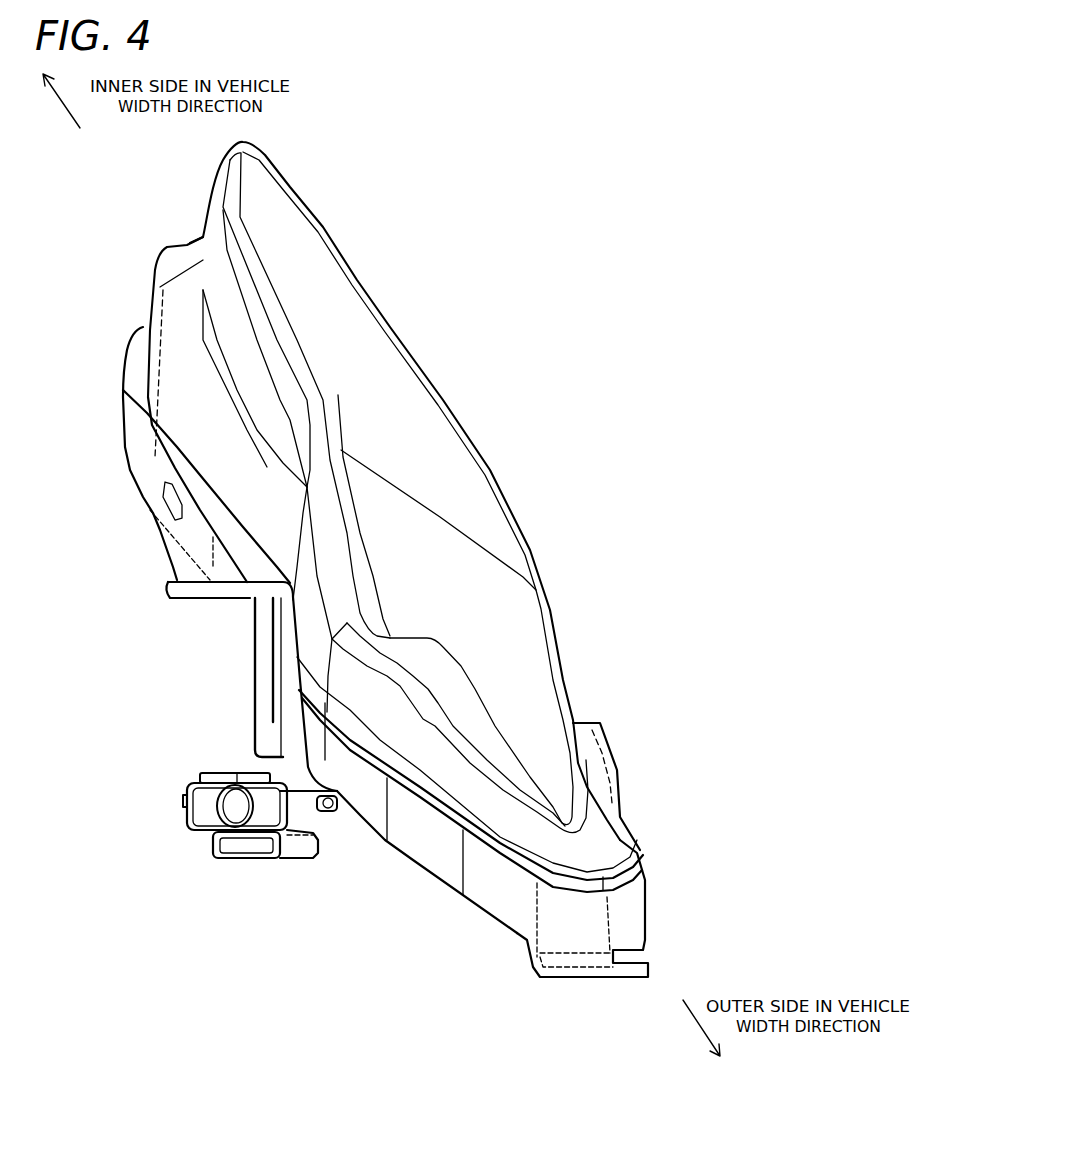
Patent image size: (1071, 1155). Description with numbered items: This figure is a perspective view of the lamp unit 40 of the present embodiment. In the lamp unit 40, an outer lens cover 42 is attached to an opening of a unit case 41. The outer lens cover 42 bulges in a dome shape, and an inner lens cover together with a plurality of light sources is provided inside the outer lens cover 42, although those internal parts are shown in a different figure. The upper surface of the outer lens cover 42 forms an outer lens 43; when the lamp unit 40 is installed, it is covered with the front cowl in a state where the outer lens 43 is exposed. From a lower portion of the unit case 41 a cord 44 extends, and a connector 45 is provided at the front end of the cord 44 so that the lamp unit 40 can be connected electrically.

The lamp unit 40 is at (543, 302).
The unit case 41 is at (417, 860).
The outer lens cover 42 is at (498, 483).
The outer lens 43 is at (368, 357).
The cord 44 is at (337, 812).
The connector 45 is at (240, 860).